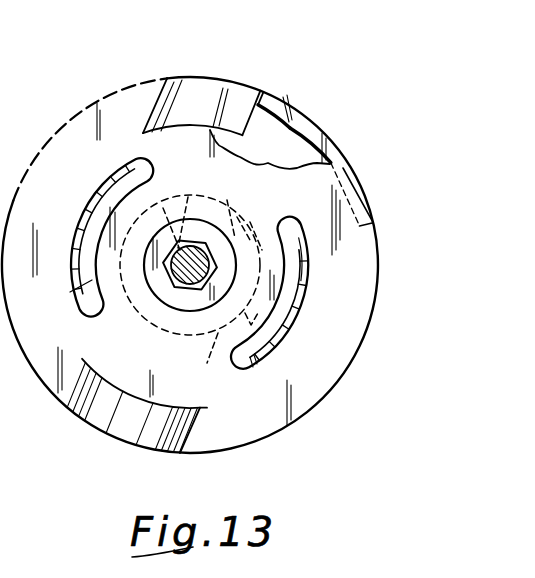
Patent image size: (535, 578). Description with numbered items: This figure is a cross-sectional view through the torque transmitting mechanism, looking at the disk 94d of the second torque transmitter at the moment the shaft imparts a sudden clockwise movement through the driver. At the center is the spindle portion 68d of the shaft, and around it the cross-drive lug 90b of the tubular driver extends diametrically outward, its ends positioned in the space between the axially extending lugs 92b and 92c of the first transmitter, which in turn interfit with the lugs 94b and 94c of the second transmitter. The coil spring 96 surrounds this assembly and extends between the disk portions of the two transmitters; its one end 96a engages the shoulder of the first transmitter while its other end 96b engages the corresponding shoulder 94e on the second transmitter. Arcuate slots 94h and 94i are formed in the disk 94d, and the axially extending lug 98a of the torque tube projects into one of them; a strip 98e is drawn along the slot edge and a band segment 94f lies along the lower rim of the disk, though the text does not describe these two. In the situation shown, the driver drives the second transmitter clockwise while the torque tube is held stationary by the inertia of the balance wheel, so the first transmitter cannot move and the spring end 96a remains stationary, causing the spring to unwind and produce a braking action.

The spring end 96a is at (189, 75).
The spring end 96b is at (257, 90).
The coil spring 96 is at (323, 132).
The shoulder 94e is at (257, 120).
The axially extending lug 98a is at (97, 194).
The slot edge strip 98e is at (76, 228).
The slot 94i is at (290, 256).
The slot 94h is at (77, 272).
The lug 94c is at (128, 305).
The spindle portion 68d is at (172, 284).
The axially extending lug 92b is at (151, 207).
The axially extending lug 92c is at (208, 363).
The cross-drive lug 90b is at (214, 213).
The lug 94b is at (250, 222).
The bottom band segment 94f is at (130, 427).
The disk 94d is at (260, 427).